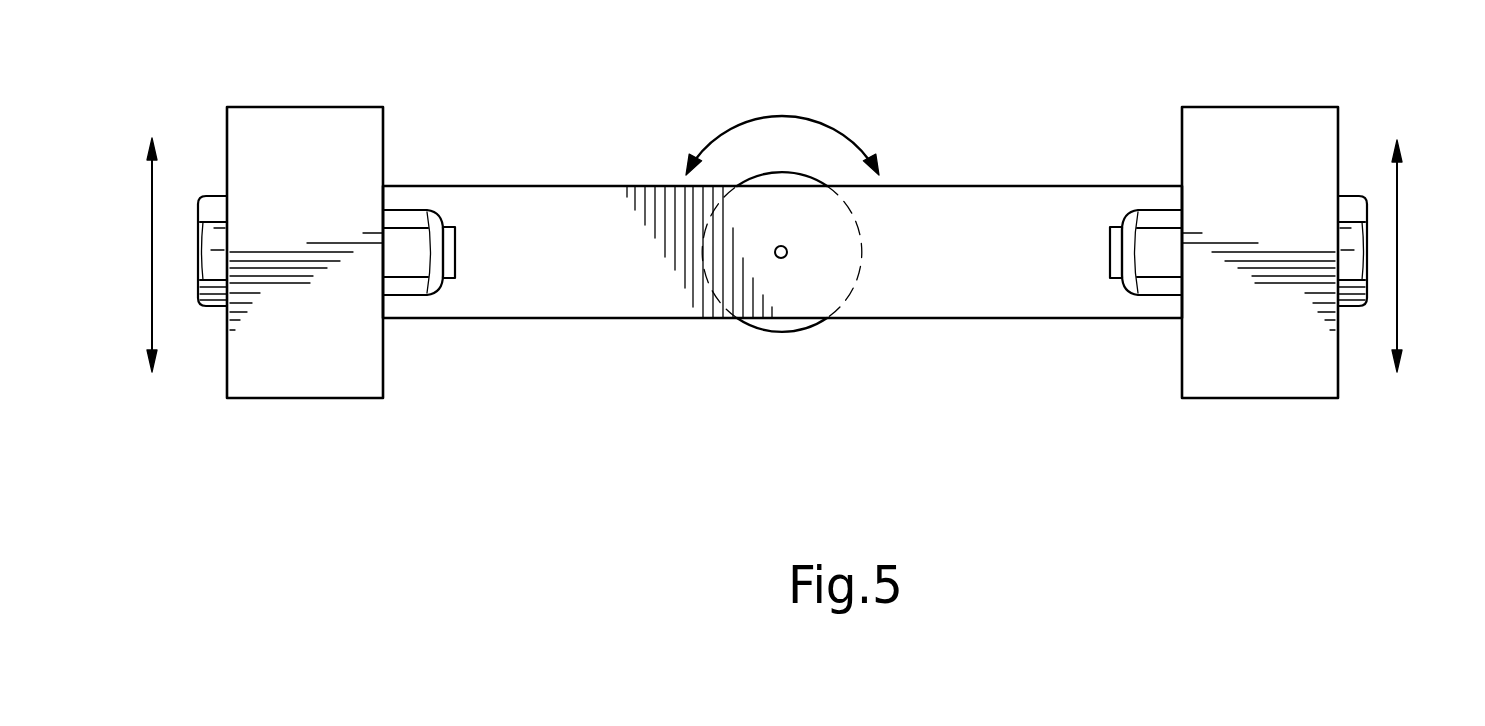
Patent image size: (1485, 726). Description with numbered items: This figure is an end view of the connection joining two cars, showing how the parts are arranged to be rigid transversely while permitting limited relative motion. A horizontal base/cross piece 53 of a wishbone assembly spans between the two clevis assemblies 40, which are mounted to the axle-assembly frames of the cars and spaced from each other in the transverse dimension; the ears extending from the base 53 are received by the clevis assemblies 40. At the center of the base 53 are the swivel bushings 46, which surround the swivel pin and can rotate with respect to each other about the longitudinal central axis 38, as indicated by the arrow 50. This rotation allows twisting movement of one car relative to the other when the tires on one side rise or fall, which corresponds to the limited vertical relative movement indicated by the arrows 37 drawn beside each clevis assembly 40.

The arrows 37 is at (150, 181).
The longitudinal central axis 38 is at (787, 252).
The clevis assemblies 40 is at (305, 120).
The swivel bushings 46 is at (750, 332).
The arrow 50 is at (781, 118).
The base/cross piece 53 is at (963, 213).